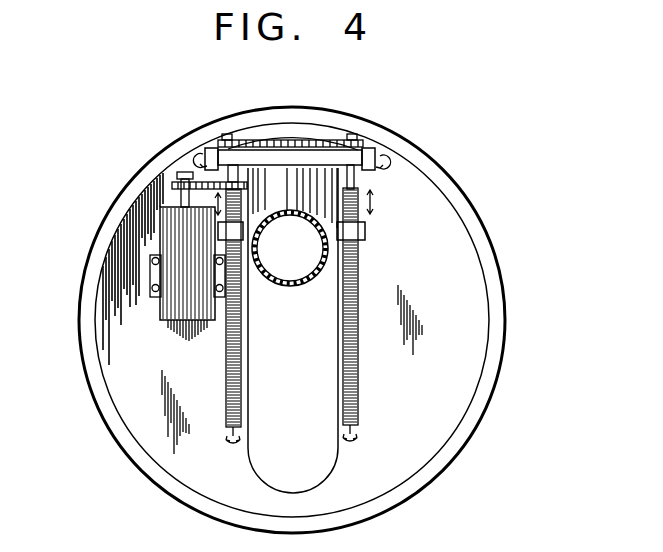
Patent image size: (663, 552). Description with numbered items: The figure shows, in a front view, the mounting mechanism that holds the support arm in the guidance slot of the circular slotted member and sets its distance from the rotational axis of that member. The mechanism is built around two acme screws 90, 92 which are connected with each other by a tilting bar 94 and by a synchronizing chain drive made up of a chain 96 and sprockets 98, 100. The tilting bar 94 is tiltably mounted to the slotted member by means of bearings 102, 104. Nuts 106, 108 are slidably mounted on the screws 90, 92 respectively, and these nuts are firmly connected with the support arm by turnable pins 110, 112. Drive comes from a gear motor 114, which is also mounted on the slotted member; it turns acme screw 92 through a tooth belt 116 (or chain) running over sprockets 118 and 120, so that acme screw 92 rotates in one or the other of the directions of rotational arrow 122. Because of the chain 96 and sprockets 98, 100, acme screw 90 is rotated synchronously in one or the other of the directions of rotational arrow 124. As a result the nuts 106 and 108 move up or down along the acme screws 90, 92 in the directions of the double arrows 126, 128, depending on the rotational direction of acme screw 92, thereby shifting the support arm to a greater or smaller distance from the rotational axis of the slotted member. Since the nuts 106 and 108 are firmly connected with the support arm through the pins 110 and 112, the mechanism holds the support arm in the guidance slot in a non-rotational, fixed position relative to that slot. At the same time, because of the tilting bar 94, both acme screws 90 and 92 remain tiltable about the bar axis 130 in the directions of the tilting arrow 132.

The acme screw 90 is at (360, 413).
The acme screw 92 is at (228, 360).
The tilting bar 94 is at (346, 140).
The chain 96 is at (290, 140).
The sprocket 98 is at (365, 140).
The sprocket 100 is at (218, 148).
The bearing 102 is at (380, 170).
The bearing 104 is at (196, 150).
The nut 106 is at (360, 262).
The nut 108 is at (160, 228).
The turnable pin 110 is at (366, 238).
The turnable pin 112 is at (168, 247).
The gear motor 114 is at (214, 262).
The tooth belt 116 is at (190, 170).
The sprocket 118 is at (176, 176).
The sprocket 120 is at (250, 178).
The rotational arrow 122 is at (238, 442).
The rotational arrow 124 is at (352, 442).
The double arrow 126 is at (214, 198).
The double arrow 128 is at (372, 203).
The bar axis 130 is at (405, 148).
The tilting arrow 132 is at (190, 152).